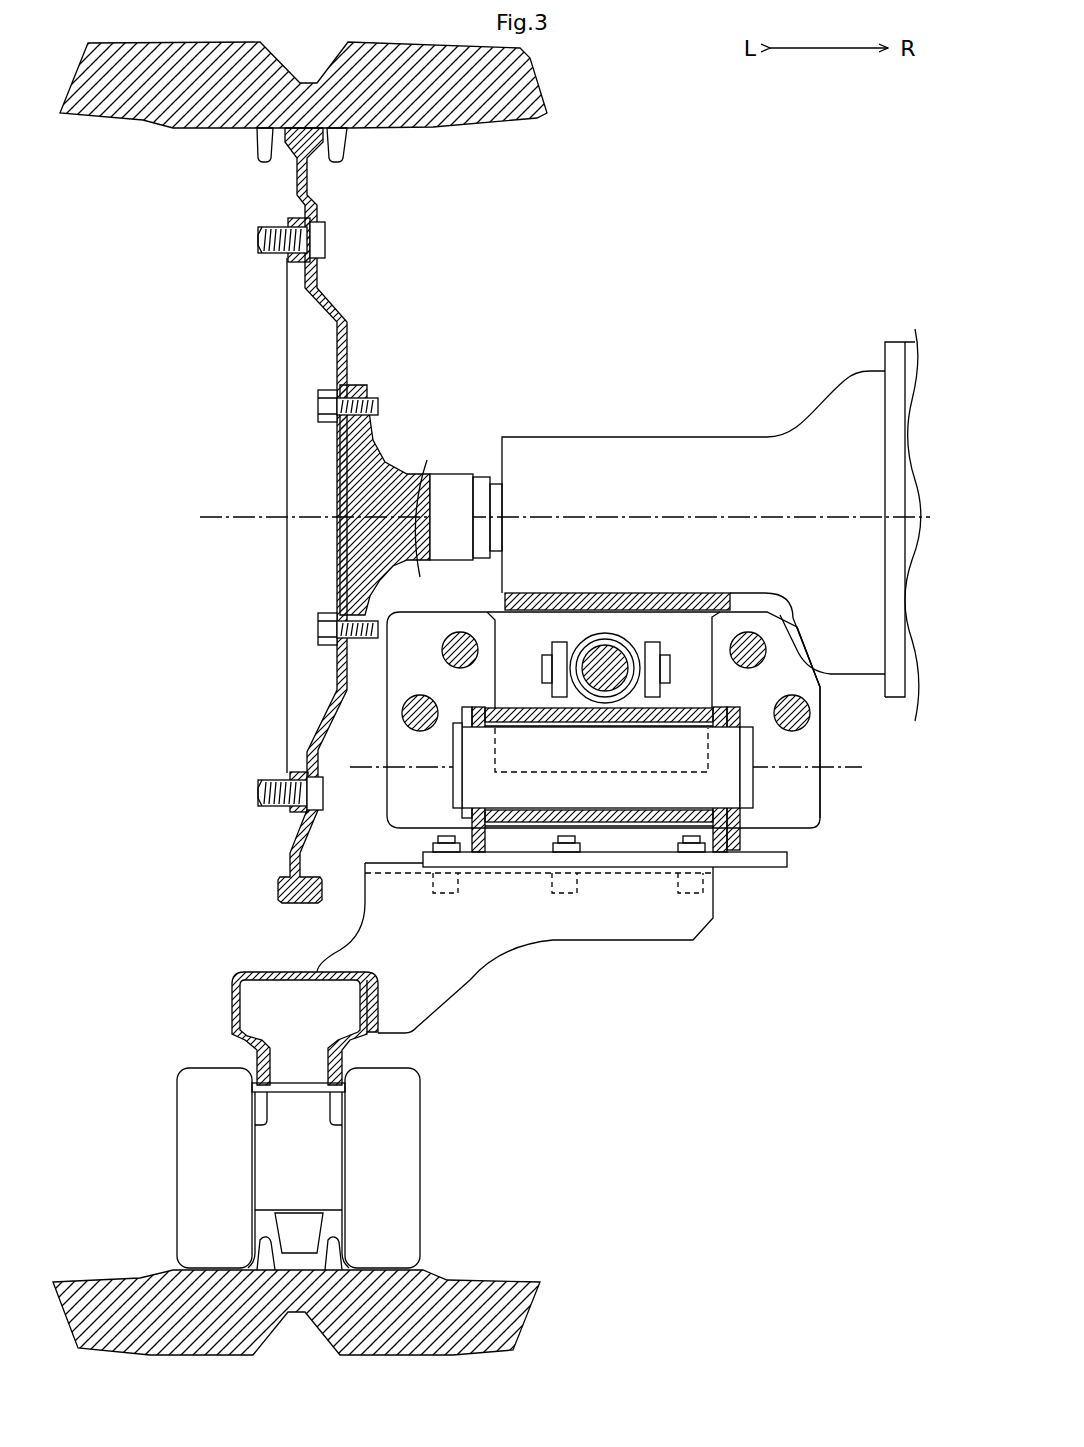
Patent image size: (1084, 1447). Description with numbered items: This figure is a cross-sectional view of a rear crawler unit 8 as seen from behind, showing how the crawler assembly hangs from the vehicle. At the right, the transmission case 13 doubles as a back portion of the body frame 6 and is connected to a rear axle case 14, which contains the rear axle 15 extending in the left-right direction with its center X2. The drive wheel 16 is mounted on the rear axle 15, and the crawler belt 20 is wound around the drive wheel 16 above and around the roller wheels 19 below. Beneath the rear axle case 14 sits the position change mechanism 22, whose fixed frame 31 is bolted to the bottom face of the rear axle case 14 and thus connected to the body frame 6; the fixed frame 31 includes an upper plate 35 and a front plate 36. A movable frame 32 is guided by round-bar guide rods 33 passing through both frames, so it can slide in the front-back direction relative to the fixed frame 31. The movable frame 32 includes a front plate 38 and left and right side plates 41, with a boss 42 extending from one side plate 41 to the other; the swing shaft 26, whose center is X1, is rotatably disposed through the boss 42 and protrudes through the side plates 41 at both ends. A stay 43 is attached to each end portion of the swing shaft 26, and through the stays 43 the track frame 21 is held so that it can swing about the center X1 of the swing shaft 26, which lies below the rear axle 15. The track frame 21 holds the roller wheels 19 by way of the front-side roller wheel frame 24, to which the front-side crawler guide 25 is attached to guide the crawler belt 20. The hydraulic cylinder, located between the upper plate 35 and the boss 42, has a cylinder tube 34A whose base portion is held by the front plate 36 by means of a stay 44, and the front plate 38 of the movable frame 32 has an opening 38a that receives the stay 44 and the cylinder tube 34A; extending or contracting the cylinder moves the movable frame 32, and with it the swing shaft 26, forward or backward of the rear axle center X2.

The crawler belt 20 is at (535, 74).
The drive wheel 16 is at (290, 195).
The rear axle 15 is at (453, 482).
The rear axle case 14 is at (648, 447).
The body frame 6 is at (693, 458).
The transmission case 13 is at (897, 342).
The rear crawler unit 8 is at (703, 170).
The upper plate 35 is at (562, 597).
The fixed frame 31 is at (662, 576).
The front plate 36 is at (695, 623).
The cylinder tube 34A is at (603, 632).
The opening 38a is at (498, 652).
The stay 44 is at (552, 685).
The guide rod 33 is at (411, 692).
The front plate 38 is at (813, 747).
The swing shaft 26 is at (732, 785).
The movable frame 32 is at (599, 709).
The stay 43 is at (480, 850).
The side plate 41 is at (490, 832).
The boss 42 is at (606, 822).
The position change mechanism 22 is at (770, 928).
The track frame 21 is at (260, 973).
The front-side roller wheel frame 24 is at (298, 1092).
The roller wheel 19 is at (407, 1170).
The front-side crawler guide 25 is at (312, 1228).
The center of the swing shaft X1 is at (858, 783).
The center of the rear axle X2 is at (240, 508).